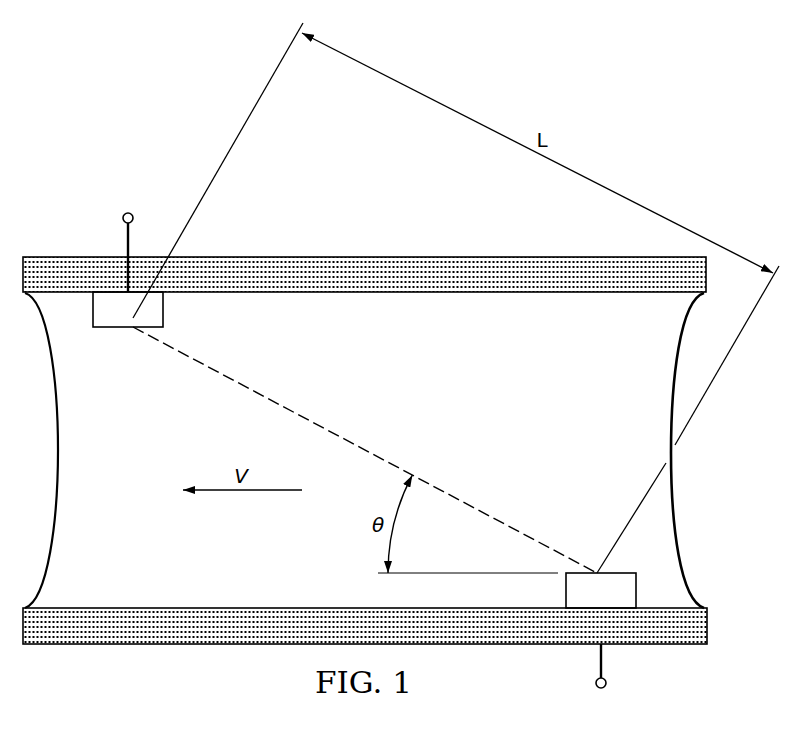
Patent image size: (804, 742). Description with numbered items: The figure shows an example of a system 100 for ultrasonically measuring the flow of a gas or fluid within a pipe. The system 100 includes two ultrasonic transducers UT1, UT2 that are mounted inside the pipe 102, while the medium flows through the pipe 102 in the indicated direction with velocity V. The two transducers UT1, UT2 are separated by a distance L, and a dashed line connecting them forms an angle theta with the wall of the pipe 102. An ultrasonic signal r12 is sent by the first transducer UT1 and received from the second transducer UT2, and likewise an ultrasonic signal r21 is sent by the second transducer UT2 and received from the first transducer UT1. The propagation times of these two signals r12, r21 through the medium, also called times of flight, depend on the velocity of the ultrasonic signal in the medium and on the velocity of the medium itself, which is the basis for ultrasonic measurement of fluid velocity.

The system 100 is at (365, 359).
The pipe 102 is at (405, 255).
The ultrasonic transducer UT1 is at (128, 310).
The ultrasonic transducer UT2 is at (601, 590).
The signal r21 is at (128, 242).
The signal r12 is at (601, 679).